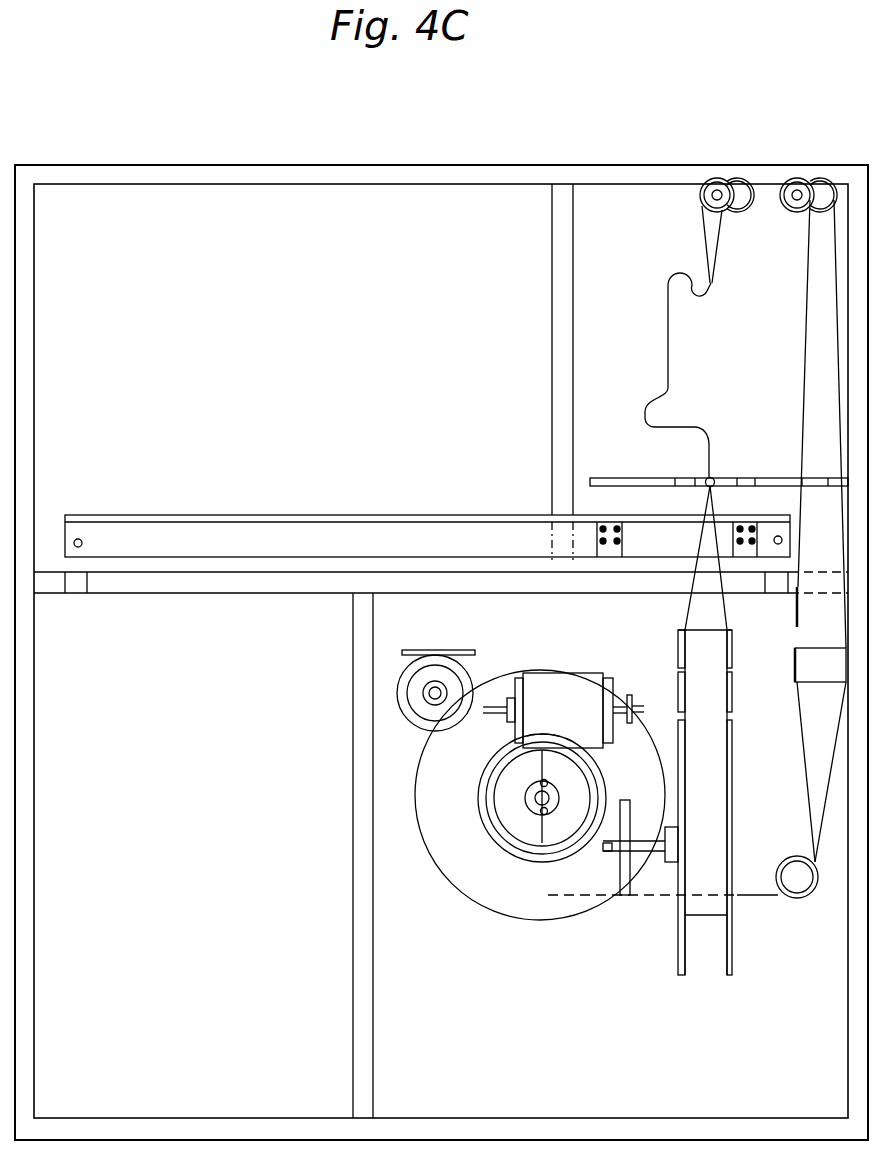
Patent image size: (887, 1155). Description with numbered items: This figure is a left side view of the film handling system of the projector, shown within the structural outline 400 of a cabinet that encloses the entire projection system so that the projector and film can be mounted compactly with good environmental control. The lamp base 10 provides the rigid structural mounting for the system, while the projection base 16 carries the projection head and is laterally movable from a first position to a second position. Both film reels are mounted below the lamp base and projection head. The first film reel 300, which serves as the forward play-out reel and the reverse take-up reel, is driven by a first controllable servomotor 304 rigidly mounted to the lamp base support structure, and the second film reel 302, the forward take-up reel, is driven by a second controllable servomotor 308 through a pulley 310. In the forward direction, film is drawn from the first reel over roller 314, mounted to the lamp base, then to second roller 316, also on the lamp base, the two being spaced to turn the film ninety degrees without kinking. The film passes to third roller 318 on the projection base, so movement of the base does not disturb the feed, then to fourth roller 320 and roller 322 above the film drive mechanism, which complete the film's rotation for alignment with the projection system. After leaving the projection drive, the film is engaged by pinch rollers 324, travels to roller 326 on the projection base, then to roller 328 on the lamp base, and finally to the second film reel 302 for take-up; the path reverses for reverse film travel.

The structural outline 400 is at (402, 165).
The lamp base 10 is at (345, 515).
The projection base 16 is at (606, 478).
The roller 322 is at (742, 180).
The fourth roller 320 is at (818, 182).
The pinch rollers 324 is at (713, 480).
The second film reel 302 is at (732, 962).
The roller 326 is at (678, 688).
The roller 328 is at (732, 650).
The third roller 318 is at (796, 606).
The second roller 316 is at (794, 668).
The roller 314 is at (797, 898).
The first controllable servomotor 304 is at (470, 680).
The second controllable servomotor 308 is at (605, 672).
The first film reel 300 is at (540, 918).
The pulley 310 is at (627, 897).